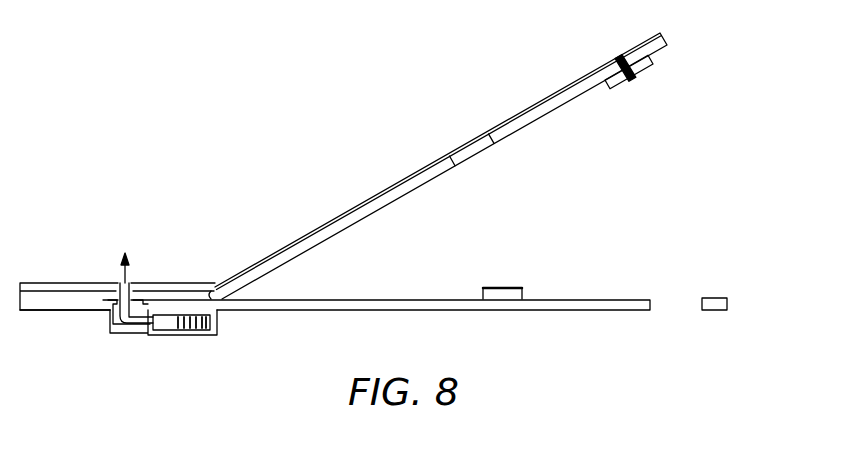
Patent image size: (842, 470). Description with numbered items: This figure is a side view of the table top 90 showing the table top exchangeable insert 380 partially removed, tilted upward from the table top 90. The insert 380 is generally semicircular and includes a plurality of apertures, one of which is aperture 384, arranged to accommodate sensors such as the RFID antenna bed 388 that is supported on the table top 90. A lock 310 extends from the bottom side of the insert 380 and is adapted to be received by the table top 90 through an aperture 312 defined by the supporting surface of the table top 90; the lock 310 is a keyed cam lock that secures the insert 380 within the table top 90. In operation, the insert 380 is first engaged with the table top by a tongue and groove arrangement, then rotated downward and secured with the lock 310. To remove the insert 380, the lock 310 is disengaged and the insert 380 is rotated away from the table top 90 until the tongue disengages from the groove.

The table top 90 is at (608, 299).
The lock 310 is at (627, 84).
The aperture 312 is at (715, 298).
The table top exchangeable insert 380 is at (393, 199).
The aperture 384 is at (475, 146).
The RFID antenna bed 388 is at (505, 289).